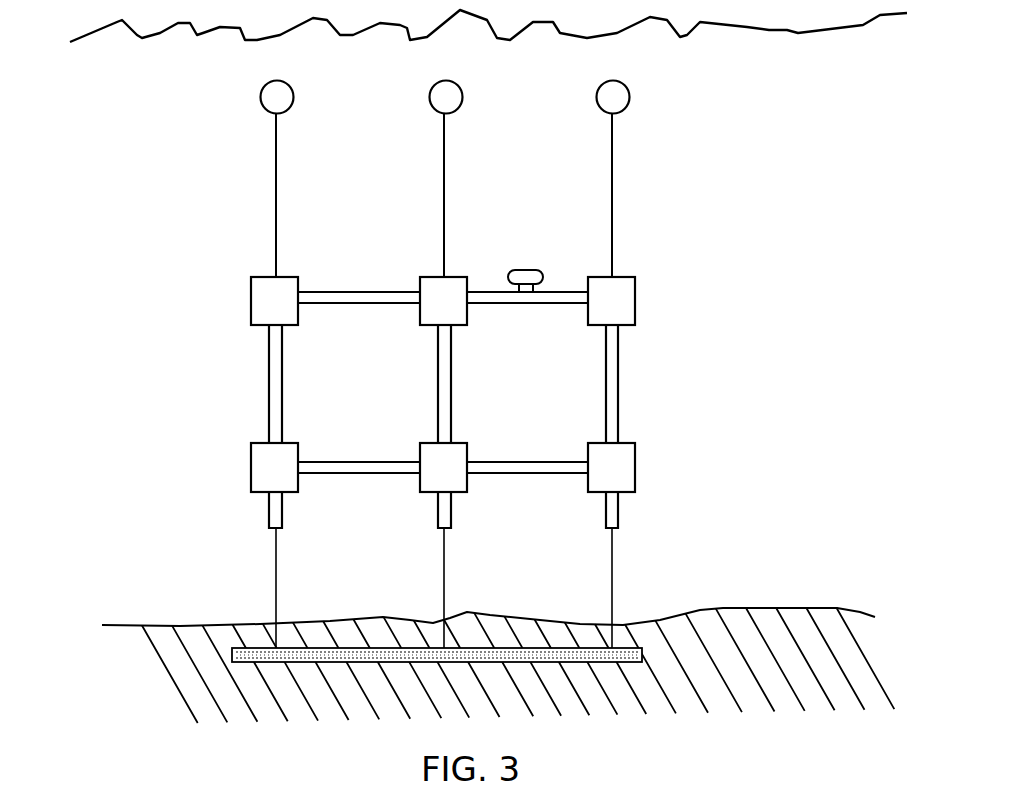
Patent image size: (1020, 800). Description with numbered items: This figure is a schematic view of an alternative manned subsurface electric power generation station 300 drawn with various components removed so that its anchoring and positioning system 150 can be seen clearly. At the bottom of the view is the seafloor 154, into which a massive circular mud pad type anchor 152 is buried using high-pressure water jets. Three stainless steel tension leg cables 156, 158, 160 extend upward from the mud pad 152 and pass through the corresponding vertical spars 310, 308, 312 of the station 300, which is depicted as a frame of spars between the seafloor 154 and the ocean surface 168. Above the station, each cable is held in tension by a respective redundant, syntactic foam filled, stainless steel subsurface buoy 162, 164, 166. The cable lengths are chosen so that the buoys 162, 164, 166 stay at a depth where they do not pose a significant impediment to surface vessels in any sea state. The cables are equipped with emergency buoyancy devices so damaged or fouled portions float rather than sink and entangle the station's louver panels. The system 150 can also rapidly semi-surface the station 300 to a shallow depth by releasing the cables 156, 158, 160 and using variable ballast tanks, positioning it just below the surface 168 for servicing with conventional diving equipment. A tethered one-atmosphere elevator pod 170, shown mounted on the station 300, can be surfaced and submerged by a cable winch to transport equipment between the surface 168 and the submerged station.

The anchoring and positioning system 150 is at (152, 227).
The mud pad anchor 152 is at (623, 648).
The seafloor 154 is at (708, 610).
The tension leg cable 156 is at (275, 182).
The tension leg cable 158 is at (443, 185).
The tension leg cable 160 is at (612, 182).
The subsurface buoy 162 is at (261, 103).
The subsurface buoy 164 is at (429, 104).
The subsurface buoy 166 is at (597, 101).
The surface of the ocean 168 is at (769, 30).
The elevator pod 170 is at (538, 268).
The station 300 is at (496, 360).
The vertical spar 308 is at (437, 383).
The vertical spar 310 is at (268, 375).
The vertical spar 312 is at (605, 375).